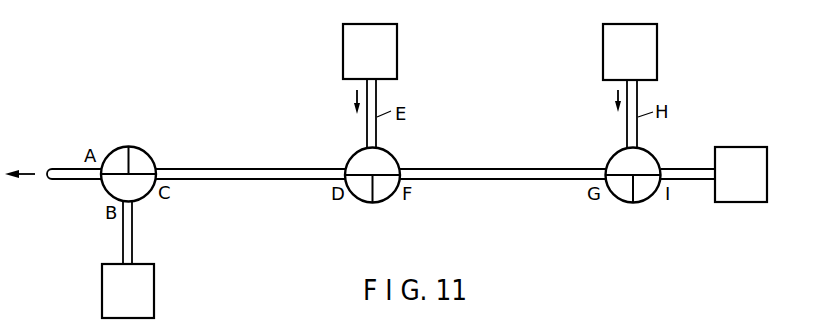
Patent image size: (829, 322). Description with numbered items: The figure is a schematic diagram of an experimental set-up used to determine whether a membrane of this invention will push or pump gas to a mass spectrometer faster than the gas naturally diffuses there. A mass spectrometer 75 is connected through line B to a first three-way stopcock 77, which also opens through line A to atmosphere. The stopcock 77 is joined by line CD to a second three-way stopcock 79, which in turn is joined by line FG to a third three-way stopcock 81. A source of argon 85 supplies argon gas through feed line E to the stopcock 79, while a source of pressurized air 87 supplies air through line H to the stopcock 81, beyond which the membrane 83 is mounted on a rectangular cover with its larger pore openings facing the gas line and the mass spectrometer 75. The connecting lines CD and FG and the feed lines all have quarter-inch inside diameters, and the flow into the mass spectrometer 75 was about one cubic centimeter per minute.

The mass spectrometer 75 is at (154, 293).
The 3-way stopcock 77 is at (148, 152).
The 3-way stopcock 79 is at (392, 156).
The 3-way stopcock 81 is at (615, 154).
The membrane 83 is at (747, 147).
The source of argon 85 is at (397, 37).
The source of pressurized air 87 is at (657, 33).